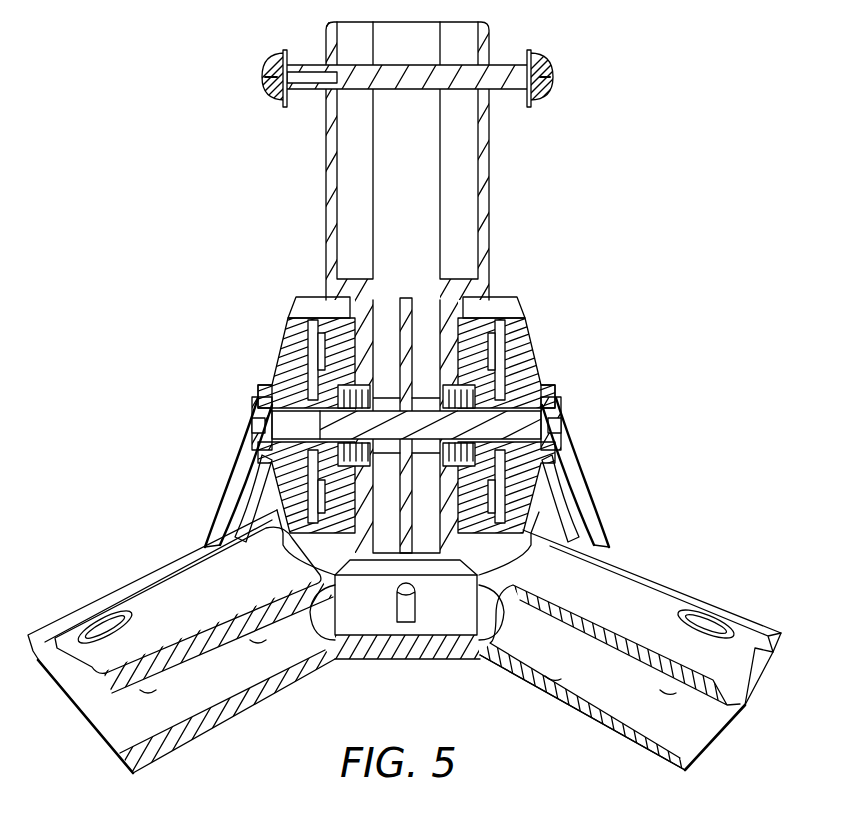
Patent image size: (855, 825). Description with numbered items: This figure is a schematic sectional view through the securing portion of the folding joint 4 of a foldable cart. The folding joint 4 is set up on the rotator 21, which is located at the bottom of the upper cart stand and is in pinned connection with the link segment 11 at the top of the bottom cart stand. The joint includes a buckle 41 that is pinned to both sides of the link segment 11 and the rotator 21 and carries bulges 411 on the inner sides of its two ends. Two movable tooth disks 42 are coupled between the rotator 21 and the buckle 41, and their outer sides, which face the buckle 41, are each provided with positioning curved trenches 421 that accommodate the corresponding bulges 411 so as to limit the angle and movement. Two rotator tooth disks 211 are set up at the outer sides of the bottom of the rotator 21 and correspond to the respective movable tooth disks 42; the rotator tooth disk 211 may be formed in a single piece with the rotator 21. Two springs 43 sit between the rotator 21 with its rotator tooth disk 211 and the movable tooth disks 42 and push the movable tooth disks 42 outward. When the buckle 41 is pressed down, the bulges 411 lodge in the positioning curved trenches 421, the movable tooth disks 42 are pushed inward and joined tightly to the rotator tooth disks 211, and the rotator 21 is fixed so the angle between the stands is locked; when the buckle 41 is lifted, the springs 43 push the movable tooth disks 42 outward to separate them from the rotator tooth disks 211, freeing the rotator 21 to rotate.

The link segment 11 is at (160, 583).
The rotator 21 is at (332, 186).
The rotator tooth disk 211 is at (355, 395).
The folding joint 4 is at (378, 421).
The buckle 41 is at (222, 503).
The bulges 411 is at (359, 363).
The positioning curved trenches 421 is at (322, 352).
The movable tooth disks 42 is at (262, 452).
The springs 43 is at (278, 383).